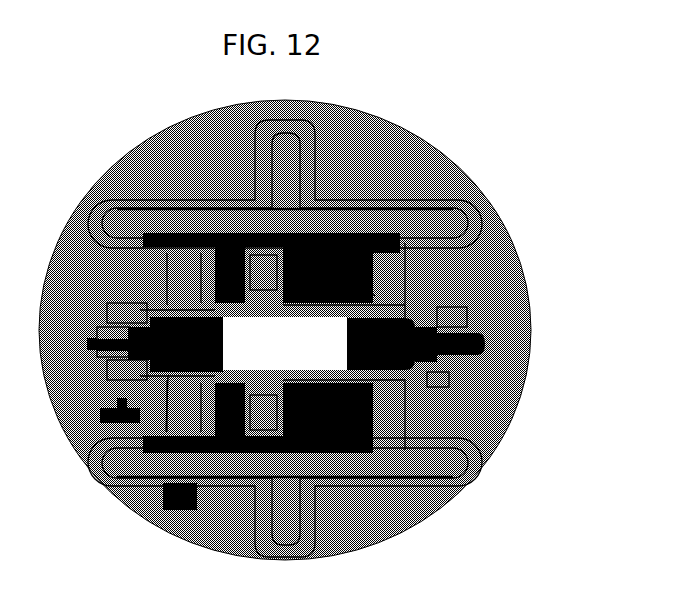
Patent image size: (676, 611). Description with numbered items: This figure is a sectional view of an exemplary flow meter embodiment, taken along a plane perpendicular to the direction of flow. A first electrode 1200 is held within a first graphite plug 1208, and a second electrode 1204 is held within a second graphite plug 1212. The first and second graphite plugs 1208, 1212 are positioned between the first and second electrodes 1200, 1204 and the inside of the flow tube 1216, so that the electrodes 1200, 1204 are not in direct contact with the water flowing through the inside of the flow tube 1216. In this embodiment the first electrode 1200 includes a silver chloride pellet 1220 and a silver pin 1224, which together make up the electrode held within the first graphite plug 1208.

The first electrode 1200 is at (168, 372).
The second electrode 1204 is at (440, 362).
The first graphite plug 1208 is at (225, 232).
The second graphite plug 1212 is at (363, 370).
The flow tube 1216 is at (323, 337).
The silver chloride pellet 1220 is at (150, 478).
The silver pin 1224 is at (130, 440).